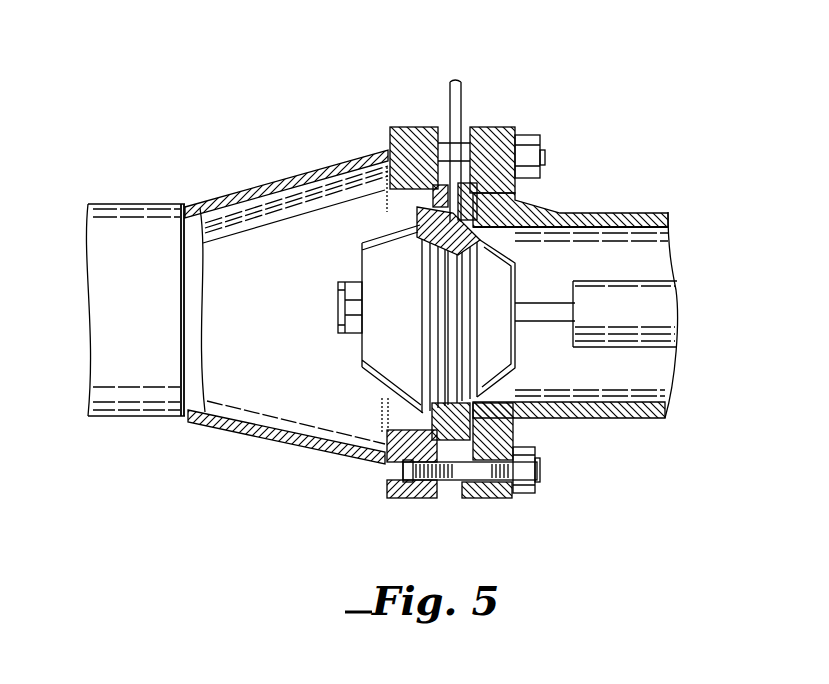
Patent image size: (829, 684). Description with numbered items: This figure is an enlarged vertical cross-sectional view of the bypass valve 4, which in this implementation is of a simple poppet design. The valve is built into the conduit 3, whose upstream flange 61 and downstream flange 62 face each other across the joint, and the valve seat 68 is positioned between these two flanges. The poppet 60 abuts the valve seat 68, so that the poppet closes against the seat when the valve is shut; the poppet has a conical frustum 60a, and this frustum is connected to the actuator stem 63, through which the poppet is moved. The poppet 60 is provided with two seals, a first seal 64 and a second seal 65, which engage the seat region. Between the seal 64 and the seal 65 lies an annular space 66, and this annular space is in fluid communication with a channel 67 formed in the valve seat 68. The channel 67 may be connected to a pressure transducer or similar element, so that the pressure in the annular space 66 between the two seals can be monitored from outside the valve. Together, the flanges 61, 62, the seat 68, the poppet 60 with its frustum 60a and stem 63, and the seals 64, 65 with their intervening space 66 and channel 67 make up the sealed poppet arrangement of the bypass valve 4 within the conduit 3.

The conduit 3 is at (256, 190).
The bypass valve 4 is at (277, 311).
The poppet 60 is at (386, 344).
The conical frustum 60a is at (510, 262).
The upstream flange 61 is at (393, 130).
The downstream flange 62 is at (514, 128).
The actuator stem 63 is at (549, 323).
The seal 64 is at (462, 215).
The seal 65 is at (535, 232).
The annular space 66 is at (428, 148).
The channel 67 is at (462, 212).
The valve seat 68 is at (473, 217).